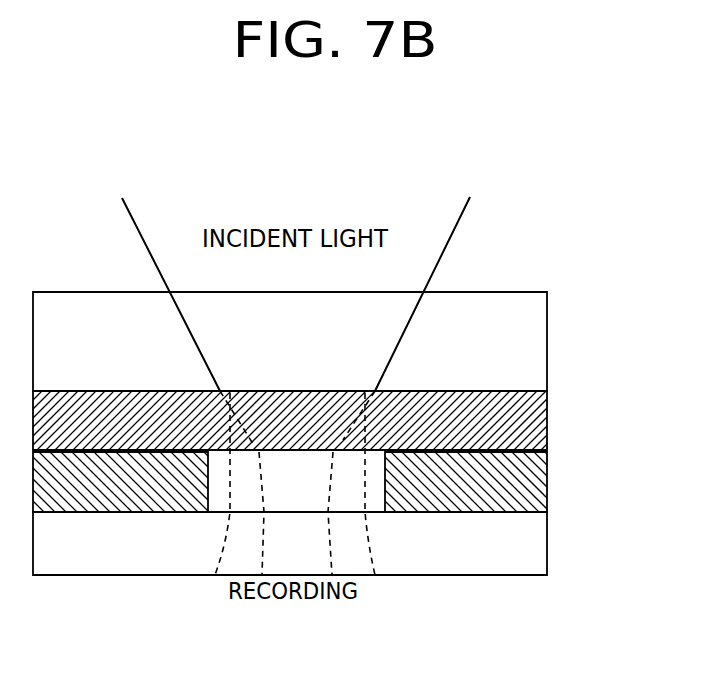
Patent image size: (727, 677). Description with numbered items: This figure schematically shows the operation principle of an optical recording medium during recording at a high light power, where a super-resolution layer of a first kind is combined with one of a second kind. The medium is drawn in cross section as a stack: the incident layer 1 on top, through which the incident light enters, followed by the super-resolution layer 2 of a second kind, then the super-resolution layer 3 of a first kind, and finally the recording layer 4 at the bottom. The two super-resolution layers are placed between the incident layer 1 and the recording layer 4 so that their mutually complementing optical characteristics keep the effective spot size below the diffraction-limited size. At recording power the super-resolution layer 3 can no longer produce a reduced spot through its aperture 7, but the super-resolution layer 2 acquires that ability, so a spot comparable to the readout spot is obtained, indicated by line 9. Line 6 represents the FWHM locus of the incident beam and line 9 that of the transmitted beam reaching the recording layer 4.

The incident layer 1 is at (540, 343).
The super-resolution layer of a second kind 2 is at (540, 424).
The super-resolution layer of a first kind 3 is at (540, 483).
The recording layer 4 is at (540, 542).
The FWHM locus of incident beam 6 is at (222, 543).
The aperture 7 is at (320, 493).
The FWHM locus of transmitted beam 9 is at (260, 520).